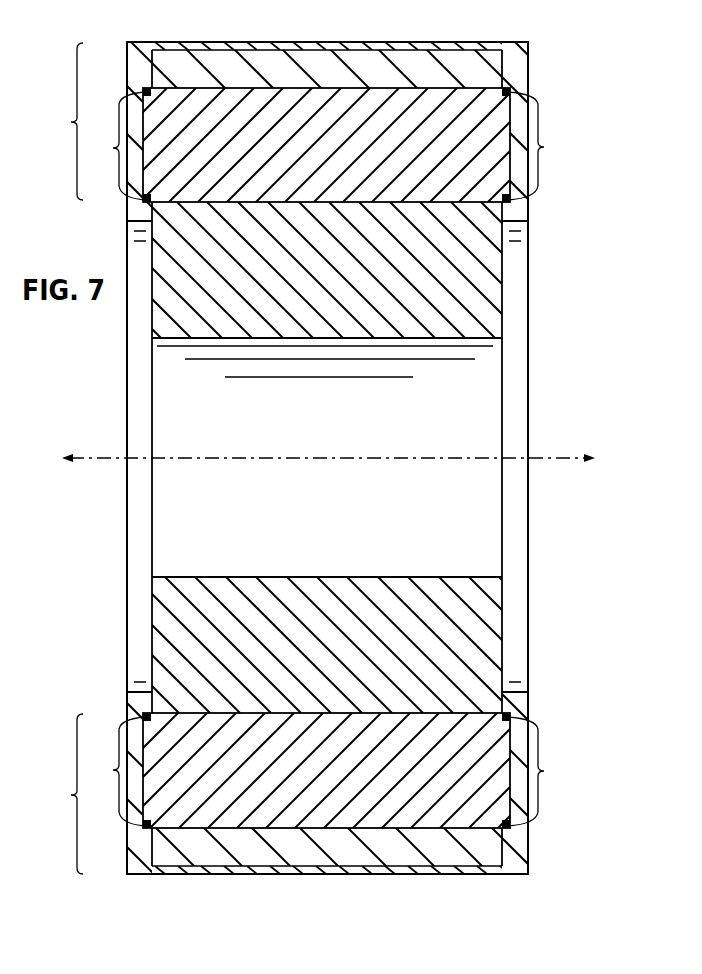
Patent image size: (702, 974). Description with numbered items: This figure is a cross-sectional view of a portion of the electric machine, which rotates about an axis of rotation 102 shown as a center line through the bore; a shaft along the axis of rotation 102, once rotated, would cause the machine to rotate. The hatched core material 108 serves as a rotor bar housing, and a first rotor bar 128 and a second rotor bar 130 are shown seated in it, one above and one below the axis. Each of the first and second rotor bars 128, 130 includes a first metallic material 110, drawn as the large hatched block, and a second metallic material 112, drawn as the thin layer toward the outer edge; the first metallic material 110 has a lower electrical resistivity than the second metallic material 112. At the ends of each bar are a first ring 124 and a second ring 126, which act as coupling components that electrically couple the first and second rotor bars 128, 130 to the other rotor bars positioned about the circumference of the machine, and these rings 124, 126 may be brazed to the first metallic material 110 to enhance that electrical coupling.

The axis of rotation 102 is at (326, 457).
The core material 108 is at (398, 42).
The first metallic material 110 is at (348, 158).
The second metallic material 112 is at (208, 77).
The first ring 124 is at (112, 459).
The second ring 126 is at (541, 459).
The first rotor bar 128 is at (61, 121).
The second rotor bar 130 is at (61, 794).